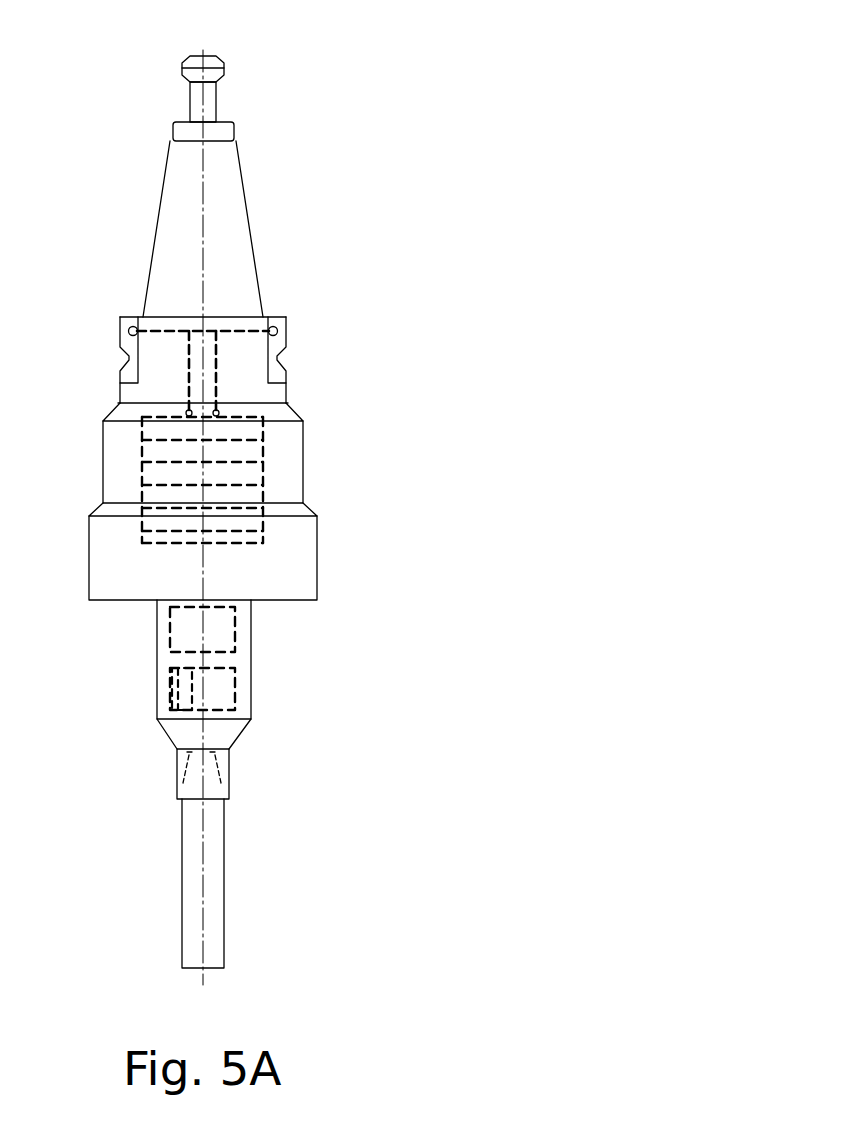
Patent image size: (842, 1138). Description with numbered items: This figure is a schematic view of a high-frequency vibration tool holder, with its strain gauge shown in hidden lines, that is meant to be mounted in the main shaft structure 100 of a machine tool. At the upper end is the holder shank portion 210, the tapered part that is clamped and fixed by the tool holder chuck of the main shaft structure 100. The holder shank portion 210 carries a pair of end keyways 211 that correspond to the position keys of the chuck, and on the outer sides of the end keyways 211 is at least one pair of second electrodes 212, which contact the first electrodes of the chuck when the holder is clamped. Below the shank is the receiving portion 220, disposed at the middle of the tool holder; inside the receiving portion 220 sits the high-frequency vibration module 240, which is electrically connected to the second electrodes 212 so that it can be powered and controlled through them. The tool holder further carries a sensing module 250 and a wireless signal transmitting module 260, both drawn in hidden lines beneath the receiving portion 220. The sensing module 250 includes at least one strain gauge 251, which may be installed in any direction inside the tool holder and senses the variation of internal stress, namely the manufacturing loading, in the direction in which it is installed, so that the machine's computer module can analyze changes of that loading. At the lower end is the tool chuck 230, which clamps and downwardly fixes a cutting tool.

The main shaft structure 100 is at (525, 42).
The holder shank portion 210 is at (232, 170).
The end keyways 211 is at (273, 317).
The second electrodes 212 is at (278, 329).
The receiving portion 220 is at (303, 440).
The high-frequency vibration module 240 is at (264, 472).
The sensing module 250 is at (156, 683).
The strain gauge 251 is at (165, 713).
The wireless signal transmitting module 260 is at (156, 634).
The tool chuck 230 is at (230, 770).